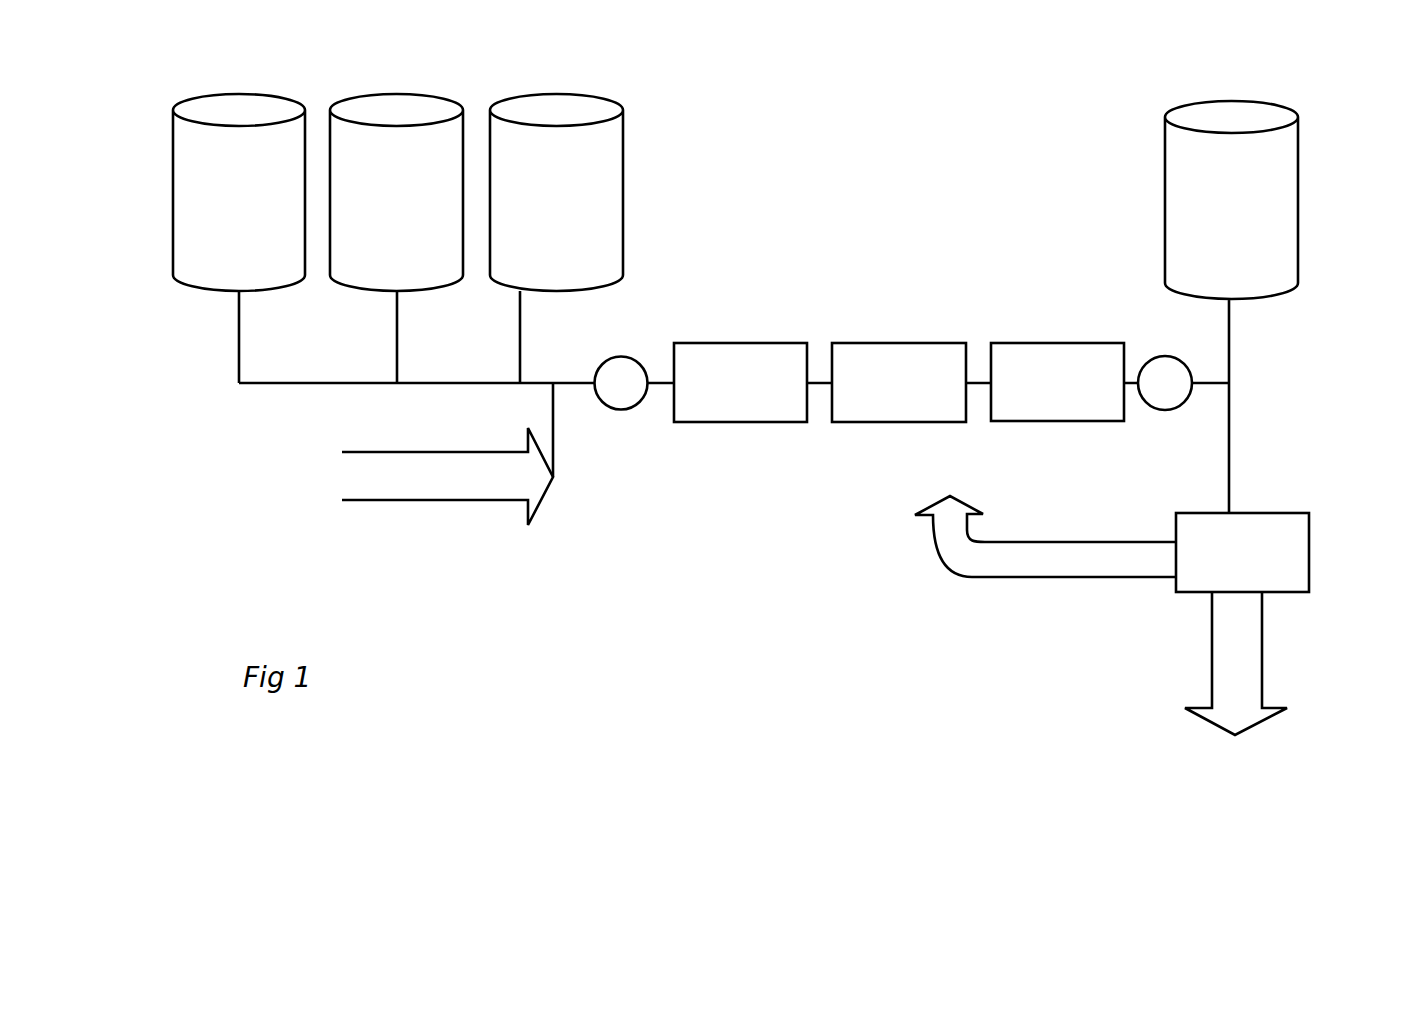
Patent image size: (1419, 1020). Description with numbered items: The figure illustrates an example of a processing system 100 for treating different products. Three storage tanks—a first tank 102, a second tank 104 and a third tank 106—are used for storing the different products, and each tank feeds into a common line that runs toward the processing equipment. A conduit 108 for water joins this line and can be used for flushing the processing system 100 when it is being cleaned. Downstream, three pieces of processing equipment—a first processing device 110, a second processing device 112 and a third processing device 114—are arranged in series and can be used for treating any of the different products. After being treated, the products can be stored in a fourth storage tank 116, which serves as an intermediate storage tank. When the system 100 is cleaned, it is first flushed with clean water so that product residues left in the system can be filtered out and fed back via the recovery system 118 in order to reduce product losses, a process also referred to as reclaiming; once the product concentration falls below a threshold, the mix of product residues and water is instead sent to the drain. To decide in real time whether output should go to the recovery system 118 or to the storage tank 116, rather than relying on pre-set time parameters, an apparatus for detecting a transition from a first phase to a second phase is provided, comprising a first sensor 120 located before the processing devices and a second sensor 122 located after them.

The processing system 100 is at (808, 158).
The first tank 102 is at (239, 238).
The second tank 104 is at (396, 238).
The third tank 106 is at (556, 238).
The conduit 108 is at (383, 487).
The first processing device 110 is at (740, 382).
The second processing device 112 is at (899, 382).
The third processing device 114 is at (1057, 382).
The fourth storage tank 116 is at (1231, 307).
The recovery system 118 is at (1287, 548).
The first sensor 120 is at (621, 383).
The second sensor 122 is at (1165, 383).